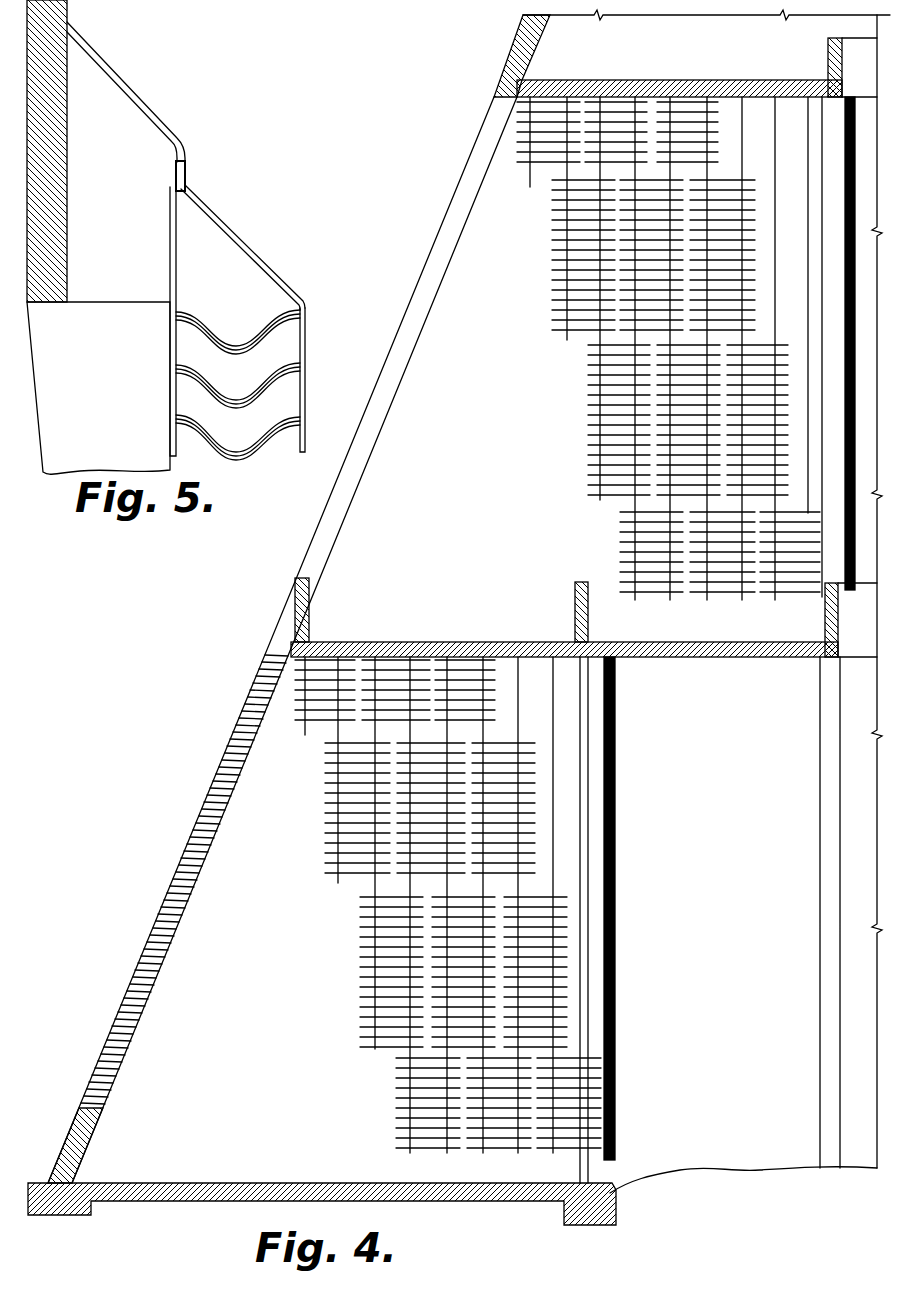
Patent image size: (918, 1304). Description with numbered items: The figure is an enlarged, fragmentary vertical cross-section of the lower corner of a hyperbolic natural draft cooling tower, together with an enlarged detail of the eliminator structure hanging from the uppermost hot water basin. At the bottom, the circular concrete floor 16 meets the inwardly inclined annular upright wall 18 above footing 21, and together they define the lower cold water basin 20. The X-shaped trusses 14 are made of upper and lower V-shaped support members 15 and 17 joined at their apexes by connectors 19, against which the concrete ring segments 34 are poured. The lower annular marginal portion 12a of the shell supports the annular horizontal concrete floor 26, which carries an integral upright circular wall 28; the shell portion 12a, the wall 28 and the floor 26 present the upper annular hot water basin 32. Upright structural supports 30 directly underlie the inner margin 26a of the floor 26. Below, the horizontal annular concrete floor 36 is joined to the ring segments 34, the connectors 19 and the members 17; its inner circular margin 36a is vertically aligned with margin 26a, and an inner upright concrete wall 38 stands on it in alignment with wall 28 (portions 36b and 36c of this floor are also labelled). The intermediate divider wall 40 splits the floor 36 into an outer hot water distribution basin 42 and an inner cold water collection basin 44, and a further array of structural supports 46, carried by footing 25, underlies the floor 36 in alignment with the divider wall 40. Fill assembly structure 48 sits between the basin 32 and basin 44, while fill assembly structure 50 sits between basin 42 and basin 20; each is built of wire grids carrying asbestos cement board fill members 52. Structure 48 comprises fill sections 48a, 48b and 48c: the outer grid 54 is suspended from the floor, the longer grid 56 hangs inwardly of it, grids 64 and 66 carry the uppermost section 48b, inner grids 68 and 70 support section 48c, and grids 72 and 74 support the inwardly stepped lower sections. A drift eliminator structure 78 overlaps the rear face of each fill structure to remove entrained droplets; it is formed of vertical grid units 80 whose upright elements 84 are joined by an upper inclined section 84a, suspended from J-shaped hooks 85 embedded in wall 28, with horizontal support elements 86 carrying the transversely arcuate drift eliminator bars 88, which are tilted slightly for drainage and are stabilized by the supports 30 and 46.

In FIG. 4, the lower annular marginal portion of shell 12a is at (521, 40).
In FIG. 4, the X-shaped reinforced concrete trusses 14 is at (279, 640).
In FIG. 4, the upper upright V-shaped support members 15 is at (407, 370).
In FIG. 4, the circular concrete floor 16 is at (187, 1199).
In FIG. 4, the lower inverted V-shaped support members 17 is at (185, 873).
In FIG. 4, the inwardly inclined annular upright wall 18 is at (76, 1128).
In FIG. 4, the connectors 19 is at (285, 623).
In FIG. 4, the lower cold water basin 20 is at (225, 1152).
In FIG. 4, the footing 21 is at (62, 1215).
In FIG. 4, the footing 25 is at (577, 1226).
In FIG. 4, the annular horizontal concrete floor 26 is at (660, 82).
In FIG. 4, the inner margin of floor 26a is at (838, 100).
In FIG. 4, the upright circular wall 28 is at (828, 60).
In FIG. 5, the upright circular wall 28 is at (62, 150).
In FIG. 4, the upright structural supports 30 is at (836, 418).
In FIG. 5, the upright structural supports 30 is at (52, 470).
In FIG. 4, the upper annular hot water basin 32 is at (620, 52).
In FIG. 4, the reinforced concrete ring segments 34 is at (306, 629).
In FIG. 4, the horizontal annular reinforced concrete floor 36 is at (681, 659).
In FIG. 4, the inner circular margin of floor 36a is at (838, 660).
In FIG. 4, the plate middle portion 36b is at (518, 641).
In FIG. 4, the plate underside 36c is at (733, 658).
In FIG. 4, the inner upright reinforced concrete wall 38 is at (838, 618).
In FIG. 4, the intermediate upright circular concrete divider wall 40 is at (575, 612).
In FIG. 4, the outer hot water distribution basin 42 is at (445, 624).
In FIG. 4, the inner cold water collection basin 44 is at (701, 633).
In FIG. 4, the upright structural supports 46 is at (612, 906).
In FIG. 4, the fill assembly structure 48 is at (576, 344).
In FIG. 4, the fill section 48a is at (520, 153).
In FIG. 4, the fill section 48b is at (578, 112).
In FIG. 4, the fill section 48c is at (722, 105).
In FIG. 4, the fill assembly structure 50 is at (346, 900).
In FIG. 4, the asbestos cement board fill members 52 is at (541, 168).
In FIG. 4, the outer grid 54 is at (528, 170).
In FIG. 4, the grid 56 is at (565, 266).
In FIG. 4, the wire grid 64 is at (600, 380).
In FIG. 4, the wire grid 66 is at (630, 504).
In FIG. 4, the inner grid 68 is at (704, 582).
In FIG. 4, the inner grid 70 is at (735, 596).
In FIG. 4, the grid 72 is at (767, 590).
In FIG. 4, the grid 74 is at (805, 598).
In FIG. 4, the drift eliminator structure 78 is at (856, 176).
In FIG. 5, the drift eliminator structure 78 is at (308, 301).
In FIG. 5, the eliminator bar support grid units 80 is at (238, 412).
In FIG. 5, the upright wire elements 84 is at (305, 378).
In FIG. 5, the upper inclined section 84a is at (232, 231).
In FIG. 5, the J-shaped hooks 85 is at (120, 86).
In FIG. 5, the horizontal support elements 86 is at (306, 334).
In FIG. 5, the drift eliminator bars 88 is at (205, 323).